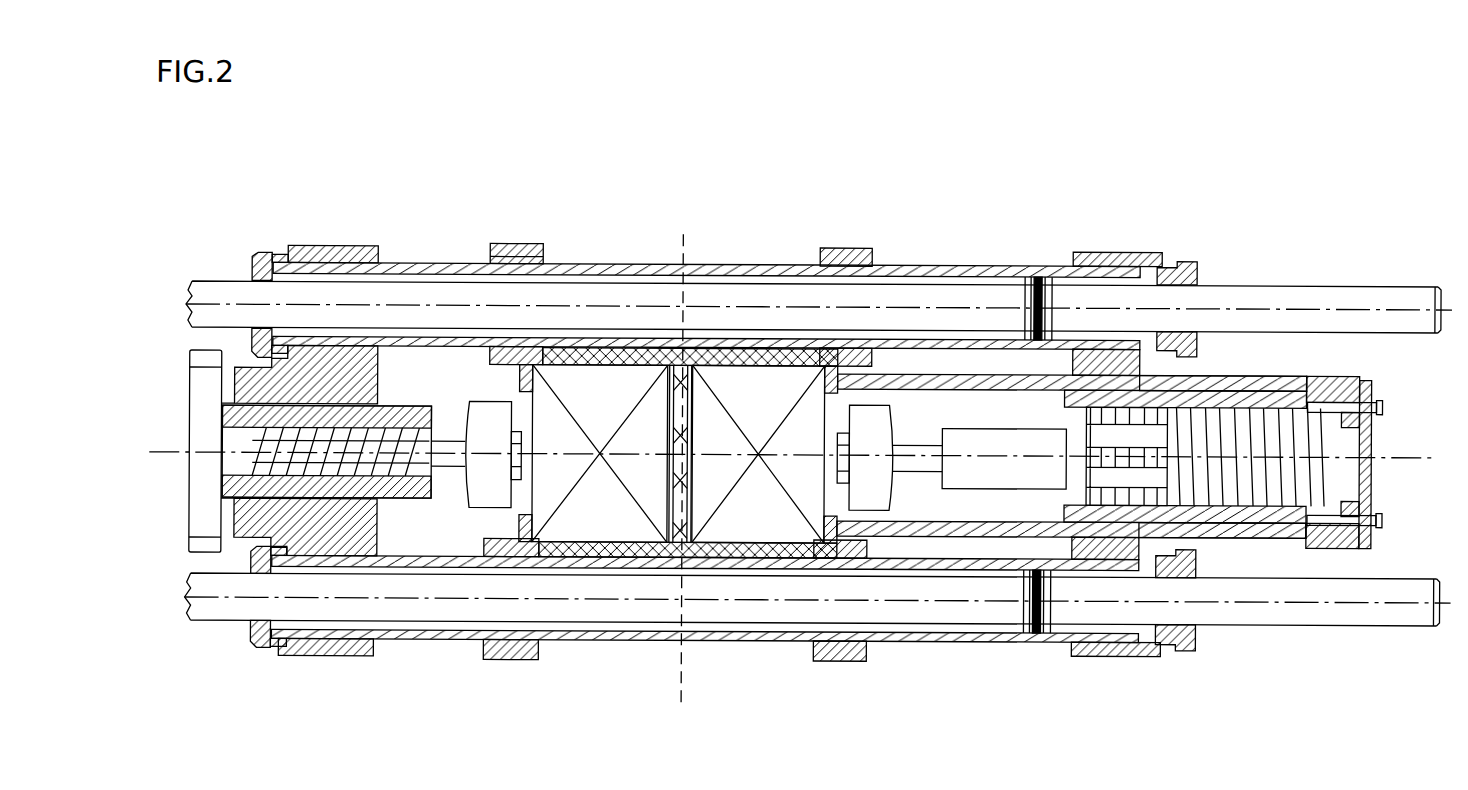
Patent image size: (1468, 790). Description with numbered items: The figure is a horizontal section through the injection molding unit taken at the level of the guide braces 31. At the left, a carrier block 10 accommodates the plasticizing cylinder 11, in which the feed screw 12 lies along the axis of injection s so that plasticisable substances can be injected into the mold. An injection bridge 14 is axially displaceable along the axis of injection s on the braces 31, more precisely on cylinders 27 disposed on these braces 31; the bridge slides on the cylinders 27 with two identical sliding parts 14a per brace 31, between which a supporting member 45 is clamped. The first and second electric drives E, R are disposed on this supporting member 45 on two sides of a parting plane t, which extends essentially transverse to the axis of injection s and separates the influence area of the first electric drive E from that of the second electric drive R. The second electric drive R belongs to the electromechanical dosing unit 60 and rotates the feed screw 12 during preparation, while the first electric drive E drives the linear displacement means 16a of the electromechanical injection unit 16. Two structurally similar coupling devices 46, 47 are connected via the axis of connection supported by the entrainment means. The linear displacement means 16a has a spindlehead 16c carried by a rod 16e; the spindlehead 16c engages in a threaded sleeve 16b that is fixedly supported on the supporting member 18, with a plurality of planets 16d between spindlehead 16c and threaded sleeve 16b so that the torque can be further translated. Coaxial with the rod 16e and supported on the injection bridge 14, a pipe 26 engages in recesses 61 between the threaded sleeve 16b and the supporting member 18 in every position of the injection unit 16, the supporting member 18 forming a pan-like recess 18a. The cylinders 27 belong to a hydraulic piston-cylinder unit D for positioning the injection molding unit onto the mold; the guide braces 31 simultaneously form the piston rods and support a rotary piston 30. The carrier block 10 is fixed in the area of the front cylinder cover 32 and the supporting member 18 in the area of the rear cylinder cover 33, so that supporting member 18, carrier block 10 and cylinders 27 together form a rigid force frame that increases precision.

The carrier block 10 is at (316, 246).
The plasticizing cylinder 11 is at (400, 397).
The feed screw 12 is at (237, 532).
The injection bridge 14 is at (878, 246).
The sliding parts 14a is at (850, 658).
The electromechanical injection unit 16 is at (990, 366).
The linear displacement means 16a is at (1002, 500).
The threaded sleeve 16b is at (1290, 515).
The spindlehead 16c is at (1148, 436).
The planets 16d is at (1040, 460).
The rod 16e is at (1004, 459).
The supporting member 18 is at (1112, 256).
The pan-like recess 18a is at (1316, 378).
The pipe 26 is at (920, 528).
The cylinders 27 is at (593, 264).
The rotary piston 30 is at (1040, 271).
The braces 31 is at (208, 296).
The front cylinder cover 32 is at (262, 251).
The rear cylinder cover 33 is at (1182, 256).
The supporting member 45 is at (641, 556).
The coupling device 46 is at (462, 540).
The coupling device 47 is at (885, 512).
The electromechanical dosing unit 60 is at (484, 378).
The recesses 61 is at (1233, 380).
The hydraulic piston-cylinder unit D is at (1063, 232).
The first electric drive E is at (717, 354).
The second electric drive R is at (643, 350).
The axis of injection s is at (788, 461).
The parting plane t is at (680, 459).